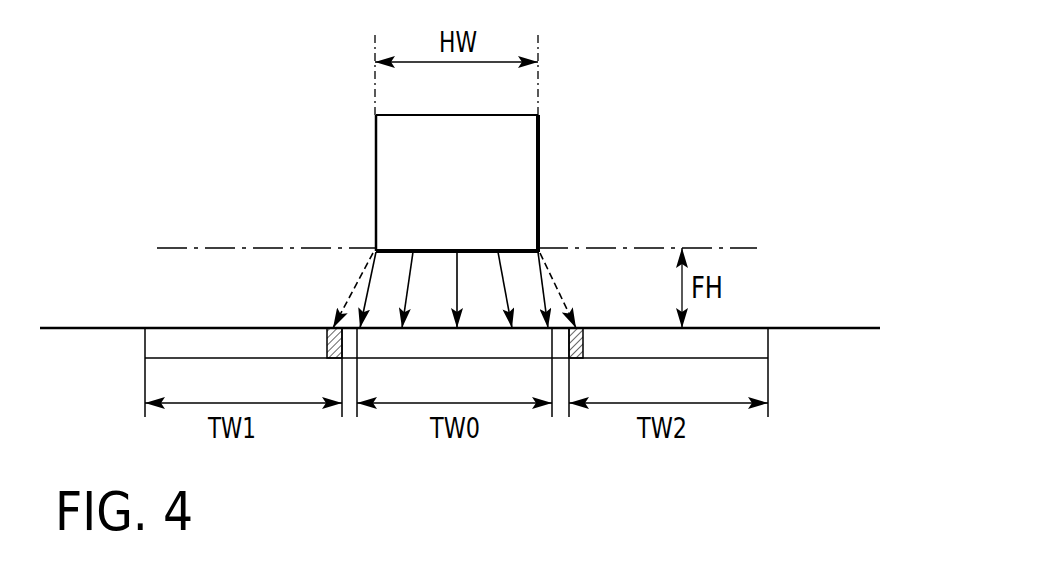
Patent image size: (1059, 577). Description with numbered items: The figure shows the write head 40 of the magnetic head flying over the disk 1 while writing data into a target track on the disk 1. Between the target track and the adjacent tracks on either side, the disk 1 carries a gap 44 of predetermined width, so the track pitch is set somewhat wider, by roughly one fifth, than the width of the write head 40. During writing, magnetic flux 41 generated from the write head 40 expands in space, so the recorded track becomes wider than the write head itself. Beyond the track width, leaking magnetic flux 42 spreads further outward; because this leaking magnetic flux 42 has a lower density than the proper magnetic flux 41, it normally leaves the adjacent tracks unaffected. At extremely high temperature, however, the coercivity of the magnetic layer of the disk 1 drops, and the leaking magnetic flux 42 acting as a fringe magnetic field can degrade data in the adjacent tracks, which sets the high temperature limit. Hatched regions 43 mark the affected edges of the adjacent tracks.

The disk 1 is at (852, 328).
The write head 40 is at (527, 152).
The magnetic flux 41 is at (458, 278).
The leaking magnetic flux 42 is at (353, 280).
The erase band region 43 is at (327, 341).
The gap 44 is at (352, 342).